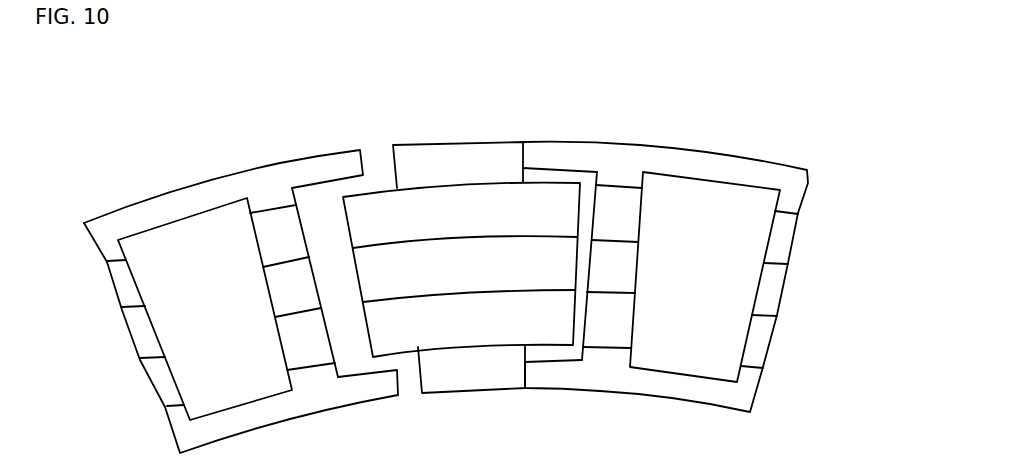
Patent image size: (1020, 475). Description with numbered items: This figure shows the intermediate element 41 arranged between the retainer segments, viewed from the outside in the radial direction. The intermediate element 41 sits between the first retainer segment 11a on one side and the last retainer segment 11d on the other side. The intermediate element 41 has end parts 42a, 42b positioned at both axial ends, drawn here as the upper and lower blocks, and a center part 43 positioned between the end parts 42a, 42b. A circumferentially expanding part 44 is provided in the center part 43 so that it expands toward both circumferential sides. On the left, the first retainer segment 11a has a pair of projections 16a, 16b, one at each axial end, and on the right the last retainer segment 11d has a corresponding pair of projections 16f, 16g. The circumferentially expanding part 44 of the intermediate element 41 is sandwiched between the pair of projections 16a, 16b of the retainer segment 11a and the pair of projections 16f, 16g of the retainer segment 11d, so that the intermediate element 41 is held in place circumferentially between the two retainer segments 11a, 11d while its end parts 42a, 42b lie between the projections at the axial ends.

The first retainer segment 11a is at (241, 283).
The last retainer segment 11d is at (665, 252).
The projection 16a is at (365, 385).
The projection 16b is at (318, 168).
The projection 16f is at (537, 378).
The projection 16g is at (557, 153).
The intermediate element 41 is at (466, 235).
The end part 42a is at (473, 367).
The end part 42b is at (434, 158).
The center part 43 is at (480, 207).
The circumferentially expanding part 44 is at (403, 323).